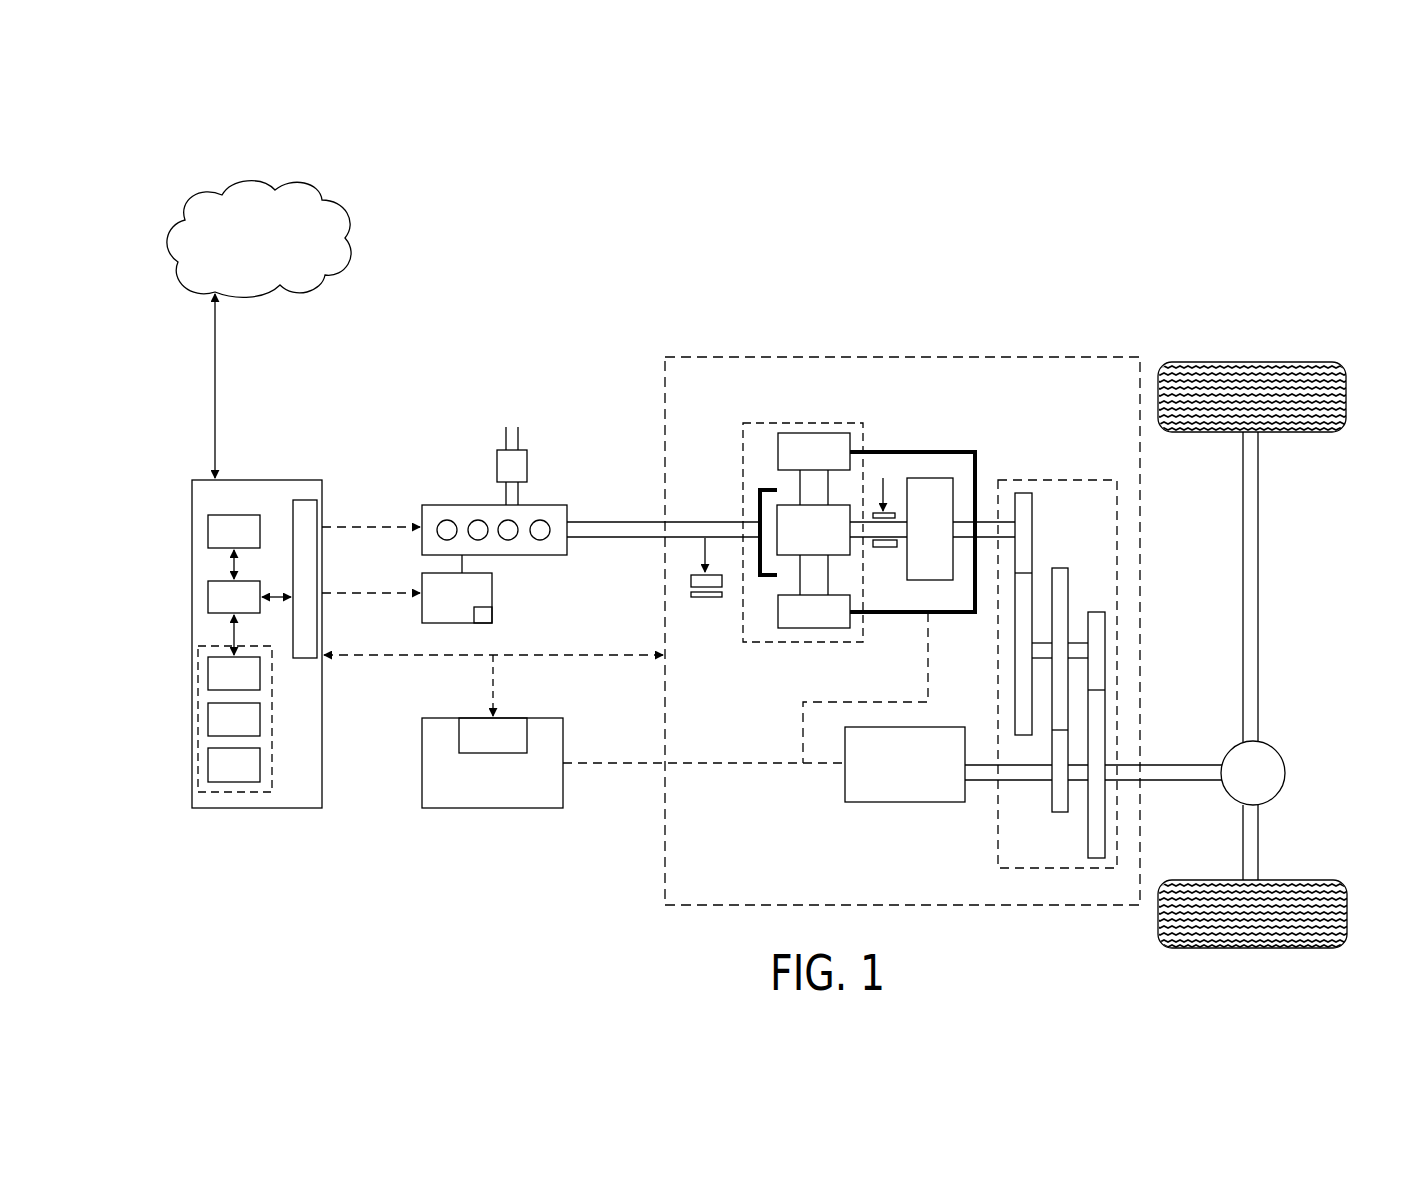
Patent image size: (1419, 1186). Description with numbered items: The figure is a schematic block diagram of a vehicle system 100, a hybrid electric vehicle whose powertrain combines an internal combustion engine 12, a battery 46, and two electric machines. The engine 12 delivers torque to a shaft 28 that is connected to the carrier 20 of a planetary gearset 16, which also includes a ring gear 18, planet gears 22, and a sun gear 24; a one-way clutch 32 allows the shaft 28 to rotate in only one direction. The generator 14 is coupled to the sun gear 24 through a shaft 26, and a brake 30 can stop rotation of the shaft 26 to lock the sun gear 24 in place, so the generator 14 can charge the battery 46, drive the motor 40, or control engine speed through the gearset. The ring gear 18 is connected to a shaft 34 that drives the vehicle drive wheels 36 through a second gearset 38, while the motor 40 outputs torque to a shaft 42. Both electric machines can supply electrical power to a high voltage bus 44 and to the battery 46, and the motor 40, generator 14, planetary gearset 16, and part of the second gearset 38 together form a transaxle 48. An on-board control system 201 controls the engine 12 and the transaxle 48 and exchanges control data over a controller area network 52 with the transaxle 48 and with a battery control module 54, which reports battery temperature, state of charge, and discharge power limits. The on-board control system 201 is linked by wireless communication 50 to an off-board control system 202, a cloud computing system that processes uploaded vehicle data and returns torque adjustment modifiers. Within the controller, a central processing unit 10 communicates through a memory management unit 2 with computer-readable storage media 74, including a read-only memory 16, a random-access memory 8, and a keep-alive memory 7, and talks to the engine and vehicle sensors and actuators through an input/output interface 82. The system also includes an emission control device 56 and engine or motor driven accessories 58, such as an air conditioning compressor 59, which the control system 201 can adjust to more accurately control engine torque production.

The vehicle system 100 is at (1346, 198).
The central processing unit 10 is at (208, 532).
The on-board vehicle control system 201 is at (252, 480).
The off-board control system 202 is at (305, 207).
The wireless communication 50 is at (216, 390).
The memory management unit 2 is at (208, 596).
The random-access memory 8 is at (208, 672).
The planetary gearset 16 is at (208, 718).
The keep-alive memory 7 is at (208, 764).
The computer-readable storage media 74 is at (225, 798).
The input/output interface 82 is at (305, 500).
The controller area network 52 is at (438, 660).
The internal combustion engine 12 is at (540, 505).
The emission control device 56 is at (497, 467).
The engine or motor driven accessories 58 is at (422, 582).
The compressor 59 is at (492, 615).
The shaft 28 is at (596, 540).
The one-way clutch 32 is at (690, 578).
The battery 46 is at (422, 763).
The battery control module 54 is at (514, 720).
The high voltage bus 44 is at (750, 758).
The transaxle 48 is at (660, 400).
The ring gear 18 is at (780, 446).
The planet gears 22 is at (800, 481).
The carrier 20 is at (760, 511).
The sun gear 24 is at (852, 548).
The generator 14 is at (935, 478).
The brake 30 is at (890, 510).
The shaft 26 is at (875, 547).
The shaft 34 is at (982, 517).
The second gearset 38 is at (1062, 870).
The motor 40 is at (905, 802).
The shaft 42 is at (987, 763).
The vehicle drive wheels 36 is at (1288, 432).